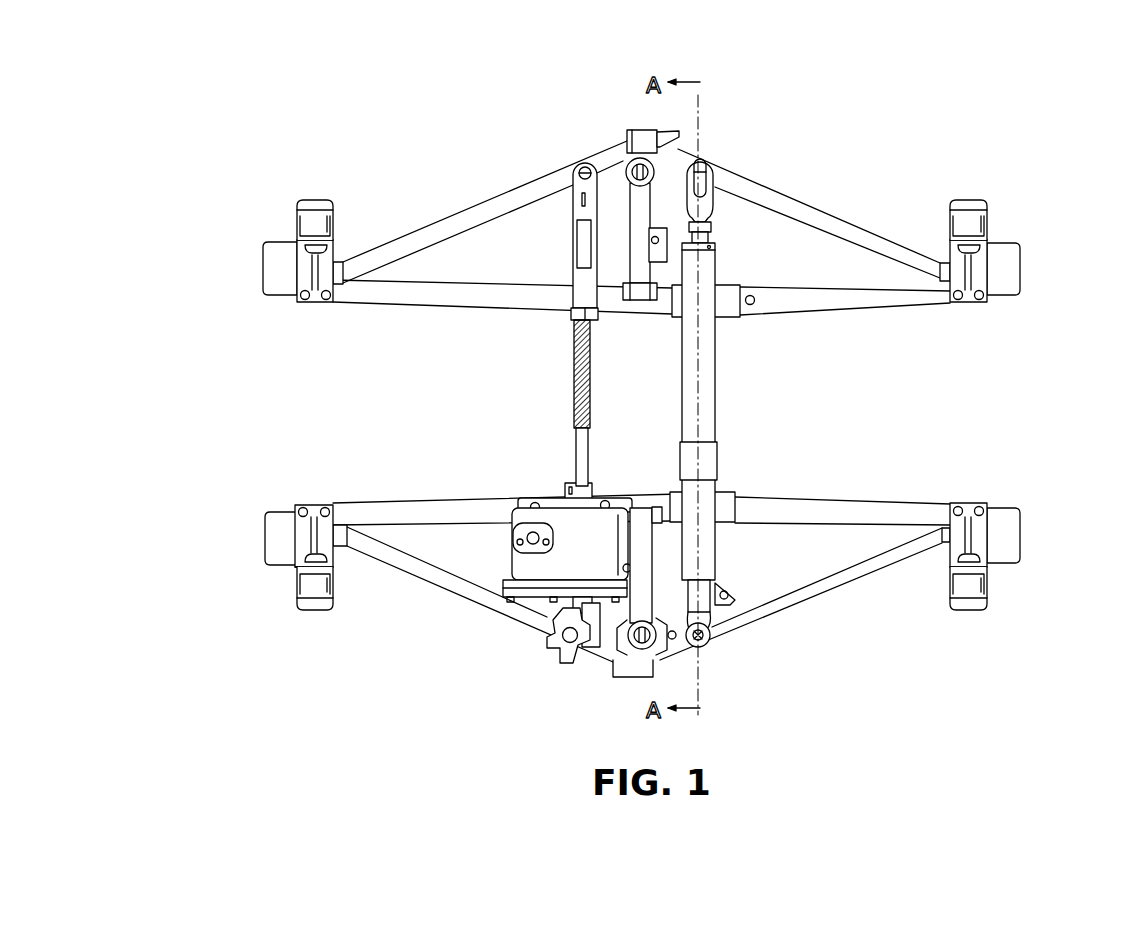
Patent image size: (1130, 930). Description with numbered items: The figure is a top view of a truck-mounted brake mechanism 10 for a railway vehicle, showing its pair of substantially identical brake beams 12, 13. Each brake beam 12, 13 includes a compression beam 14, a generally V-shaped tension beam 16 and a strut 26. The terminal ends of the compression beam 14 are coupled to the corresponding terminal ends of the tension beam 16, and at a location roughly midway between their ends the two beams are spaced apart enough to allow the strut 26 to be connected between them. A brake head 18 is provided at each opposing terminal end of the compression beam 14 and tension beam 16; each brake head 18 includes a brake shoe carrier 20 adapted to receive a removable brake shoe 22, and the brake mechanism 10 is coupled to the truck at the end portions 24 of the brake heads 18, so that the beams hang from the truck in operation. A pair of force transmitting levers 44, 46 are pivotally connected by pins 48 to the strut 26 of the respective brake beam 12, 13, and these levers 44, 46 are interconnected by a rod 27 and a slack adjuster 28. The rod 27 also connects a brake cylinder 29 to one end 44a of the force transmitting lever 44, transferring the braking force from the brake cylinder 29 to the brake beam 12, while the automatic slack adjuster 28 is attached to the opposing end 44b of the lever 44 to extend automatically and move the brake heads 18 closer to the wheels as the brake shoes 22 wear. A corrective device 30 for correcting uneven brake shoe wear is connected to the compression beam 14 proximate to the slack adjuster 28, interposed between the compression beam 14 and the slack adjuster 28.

The brake mechanism 10 is at (290, 108).
The brake beam 12 is at (432, 688).
The brake beam 13 is at (462, 92).
The compression beam 14 is at (840, 296).
The tension beam 16 is at (455, 221).
The brake head 18 is at (311, 304).
The brake shoe carrier 20 is at (297, 238).
The brake shoe 22 is at (318, 200).
The end portion 24 is at (268, 268).
The strut 26 is at (637, 293).
The rod 27 is at (573, 380).
The slack adjuster 28 is at (710, 388).
The brake cylinder 29 is at (573, 532).
The corrective device 30 is at (728, 307).
The force transmitting lever 44 is at (610, 655).
The end of force transmitting lever 44a is at (570, 647).
The opposing end of force transmitting lever 44b is at (677, 660).
The force transmitting lever 46 is at (603, 150).
The pin 48 is at (620, 148).